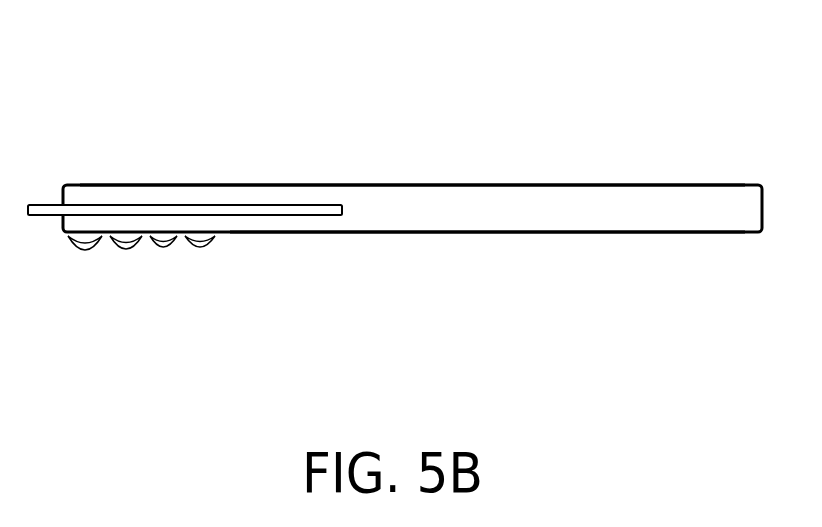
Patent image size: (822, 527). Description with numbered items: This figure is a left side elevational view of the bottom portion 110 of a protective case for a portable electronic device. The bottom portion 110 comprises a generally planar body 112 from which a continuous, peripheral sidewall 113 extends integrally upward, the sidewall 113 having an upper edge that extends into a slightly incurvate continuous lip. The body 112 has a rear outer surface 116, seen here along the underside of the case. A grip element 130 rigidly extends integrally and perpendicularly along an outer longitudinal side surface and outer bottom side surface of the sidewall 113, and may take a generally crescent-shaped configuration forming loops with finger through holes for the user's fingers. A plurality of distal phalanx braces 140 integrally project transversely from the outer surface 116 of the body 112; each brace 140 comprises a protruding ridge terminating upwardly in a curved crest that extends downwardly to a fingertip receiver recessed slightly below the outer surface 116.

The bottom portion 110 is at (483, 155).
The body 112 is at (373, 185).
The sidewall 113 is at (610, 205).
The rear outer surface 116 is at (597, 233).
The grip element 130 is at (290, 212).
The distal phalanx brace 140 is at (132, 243).